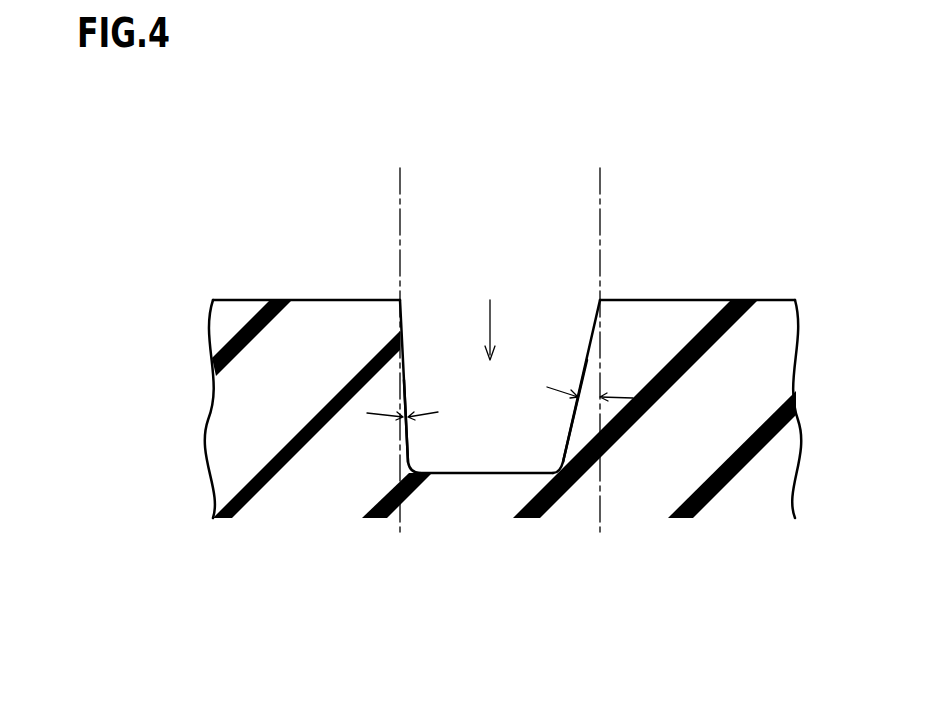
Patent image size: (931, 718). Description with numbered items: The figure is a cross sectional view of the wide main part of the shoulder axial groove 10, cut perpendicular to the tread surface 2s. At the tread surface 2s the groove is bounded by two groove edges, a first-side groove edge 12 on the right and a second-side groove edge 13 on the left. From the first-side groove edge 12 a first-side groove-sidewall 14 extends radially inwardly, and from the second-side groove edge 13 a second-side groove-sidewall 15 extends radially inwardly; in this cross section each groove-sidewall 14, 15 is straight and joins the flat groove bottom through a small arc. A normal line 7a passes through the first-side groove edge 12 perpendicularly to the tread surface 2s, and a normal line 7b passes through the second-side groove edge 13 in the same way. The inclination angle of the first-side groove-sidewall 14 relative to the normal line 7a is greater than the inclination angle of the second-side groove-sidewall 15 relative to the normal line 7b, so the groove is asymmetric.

The tread surface 2s is at (318, 300).
The second-side groove edge 13 is at (398, 298).
The second-side groove-sidewall 15 is at (407, 378).
The first-side groove edge 12 is at (600, 298).
The first-side groove-sidewall 14 is at (587, 360).
The shoulder axial groove 10 is at (490, 355).
The normal line 7b is at (400, 195).
The normal line 7a is at (600, 195).